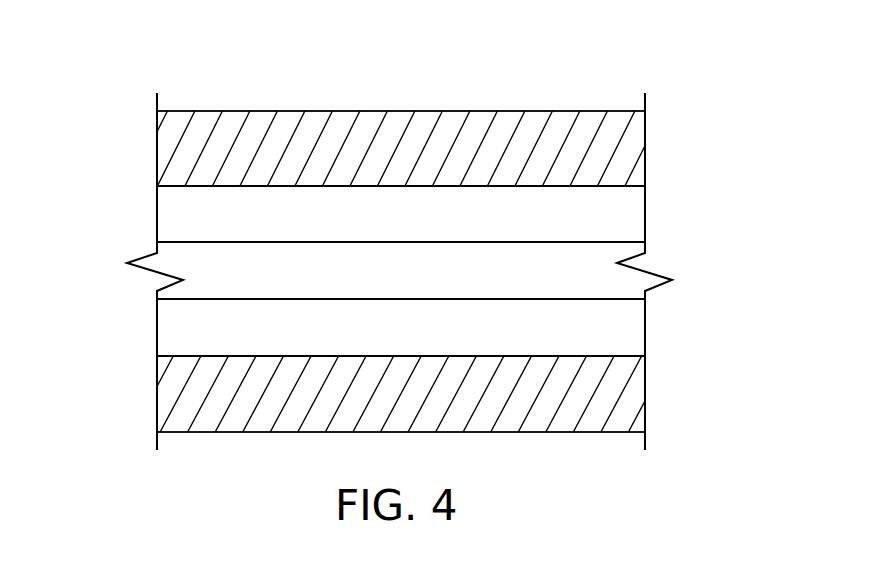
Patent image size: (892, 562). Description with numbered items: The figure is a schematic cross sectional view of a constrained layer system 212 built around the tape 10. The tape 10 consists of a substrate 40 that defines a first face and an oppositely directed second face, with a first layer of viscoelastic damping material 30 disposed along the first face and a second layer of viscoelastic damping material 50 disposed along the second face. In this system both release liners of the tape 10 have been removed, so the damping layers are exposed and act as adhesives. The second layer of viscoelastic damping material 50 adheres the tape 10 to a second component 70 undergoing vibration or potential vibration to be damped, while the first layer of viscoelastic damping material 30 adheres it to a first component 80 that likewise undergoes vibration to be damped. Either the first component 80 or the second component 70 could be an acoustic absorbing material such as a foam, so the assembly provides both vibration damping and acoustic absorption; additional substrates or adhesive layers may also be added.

The constrained layer system 212 is at (77, 92).
The tape 10 is at (780, 185).
The first layer of viscoelastic damping material 30 is at (628, 217).
The substrate 40 is at (622, 283).
The second layer of viscoelastic damping material 50 is at (628, 335).
The second component 70 is at (627, 385).
The first component 80 is at (633, 138).